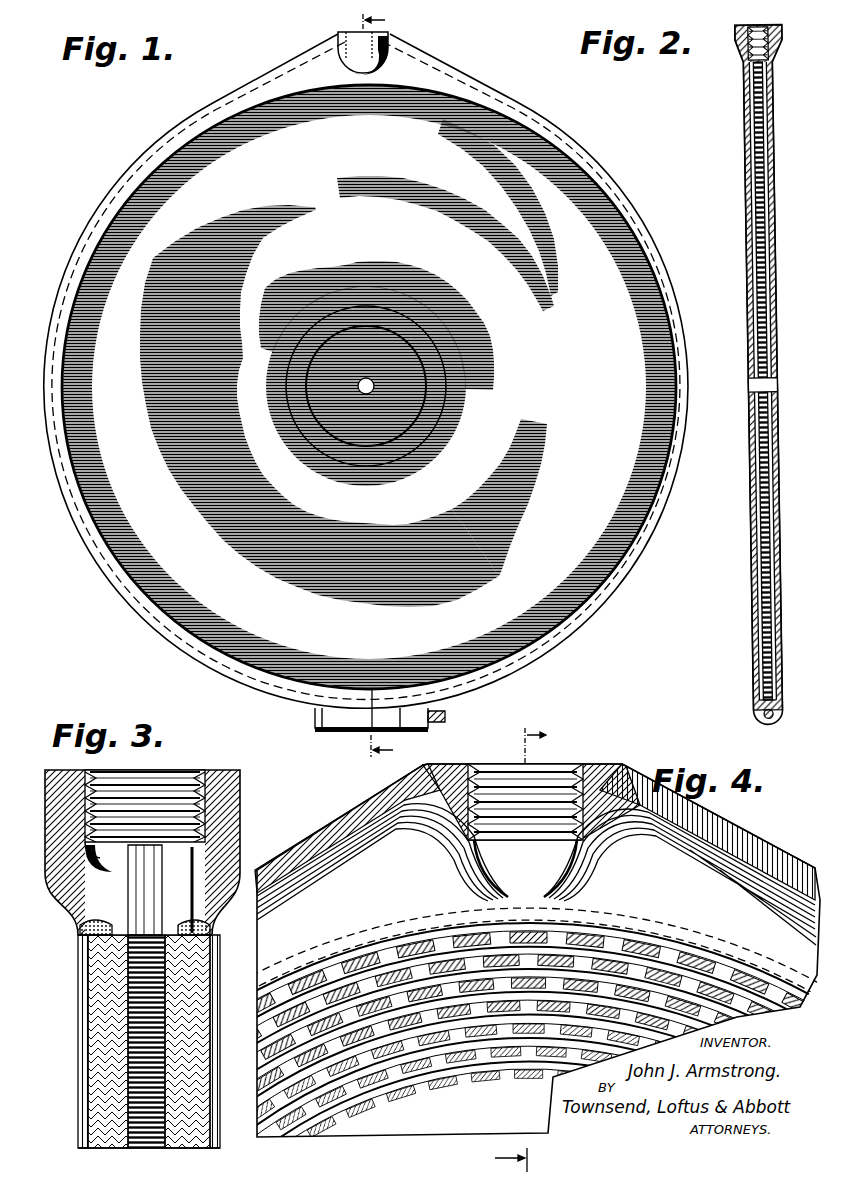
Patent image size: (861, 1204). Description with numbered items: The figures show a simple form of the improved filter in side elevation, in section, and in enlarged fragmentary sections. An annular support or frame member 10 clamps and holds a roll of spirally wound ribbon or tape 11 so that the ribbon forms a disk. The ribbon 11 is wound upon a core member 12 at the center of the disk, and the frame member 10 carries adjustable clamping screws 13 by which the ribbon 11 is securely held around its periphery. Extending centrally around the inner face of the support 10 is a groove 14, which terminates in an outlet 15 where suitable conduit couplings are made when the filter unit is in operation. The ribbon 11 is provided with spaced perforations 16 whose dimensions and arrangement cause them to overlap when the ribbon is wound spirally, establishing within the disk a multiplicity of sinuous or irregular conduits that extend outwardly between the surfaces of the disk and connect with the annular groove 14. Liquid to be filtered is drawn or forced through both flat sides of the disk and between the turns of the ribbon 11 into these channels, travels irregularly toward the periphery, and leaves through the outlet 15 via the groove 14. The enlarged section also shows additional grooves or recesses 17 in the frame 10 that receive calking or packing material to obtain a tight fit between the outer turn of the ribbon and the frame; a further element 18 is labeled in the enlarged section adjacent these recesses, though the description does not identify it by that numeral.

In FIG. 1, the annular support or frame member 10 is at (566, 133).
In FIG. 2, the annular support or frame member 10 is at (756, 696).
In FIG. 3, the annular support or frame member 10 is at (240, 810).
In FIG. 4, the annular support or frame member 10 is at (366, 832).
In FIG. 1, the spirally wound ribbon or tape 11 is at (567, 173).
In FIG. 2, the spirally wound ribbon or tape 11 is at (750, 153).
In FIG. 3, the spirally wound ribbon or tape 11 is at (92, 1060).
In FIG. 1, the core member 12 is at (373, 386).
In FIG. 2, the core member 12 is at (750, 384).
In FIG. 1, the clamping screws 13 is at (447, 717).
In FIG. 2, the clamping screws 13 is at (753, 713).
In FIG. 1, the groove 14 is at (103, 208).
In FIG. 2, the groove 14 is at (755, 70).
In FIG. 3, the groove 14 is at (148, 882).
In FIG. 4, the groove 14 is at (358, 893).
In FIG. 1, the outlet 15 is at (337, 38).
In FIG. 2, the outlet 15 is at (752, 27).
In FIG. 3, the outlet 15 is at (170, 782).
In FIG. 4, the outlet 15 is at (568, 786).
In FIG. 3, the perforations 16 is at (160, 1042).
In FIG. 4, the perforations 16 is at (742, 963).
In FIG. 3, the grooves or recesses 17 is at (88, 926).
In FIG. 3, the wall lining 18 is at (84, 972).